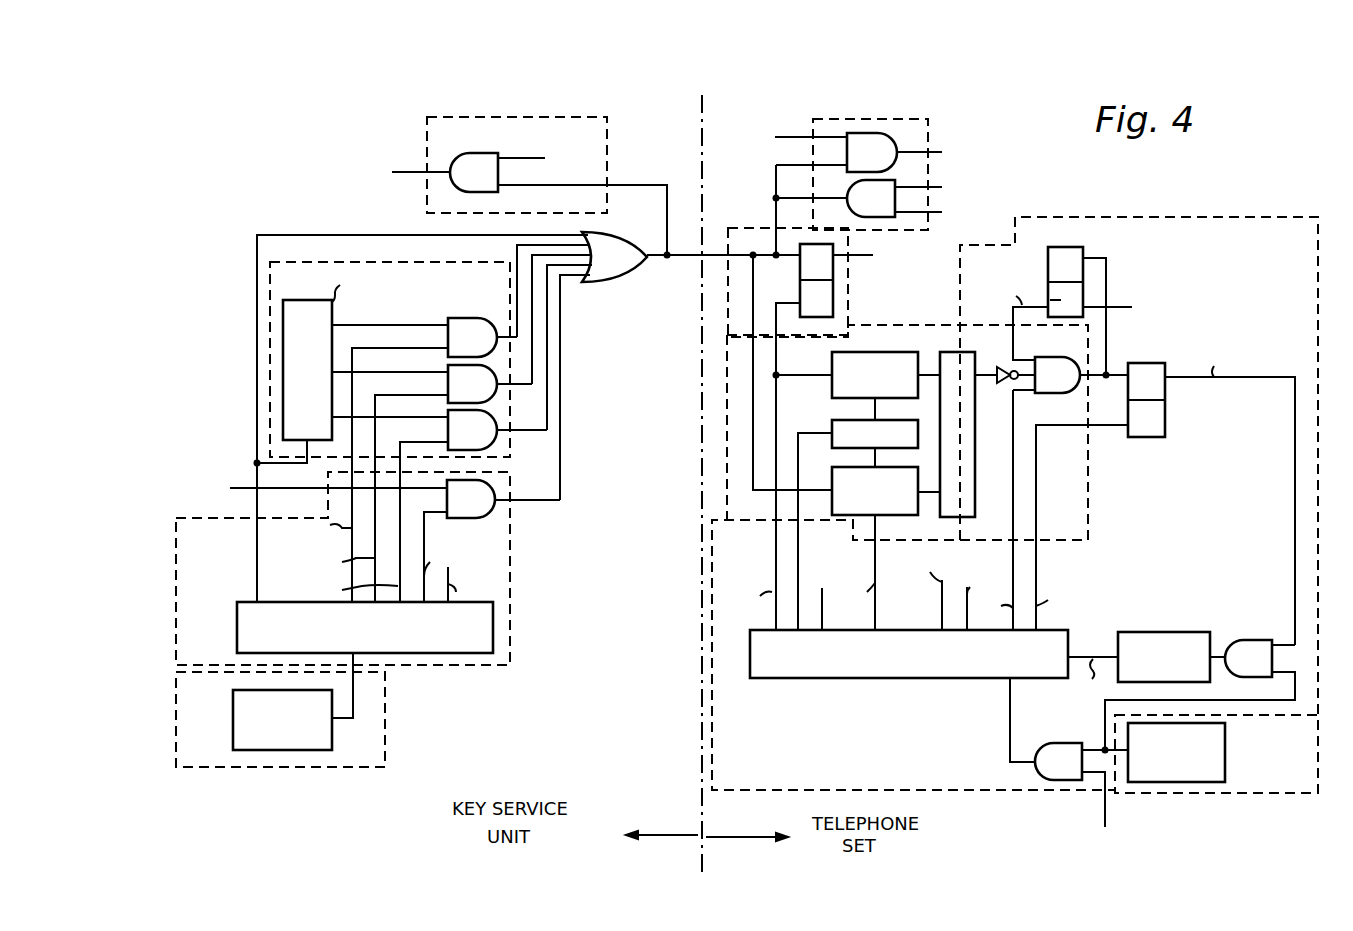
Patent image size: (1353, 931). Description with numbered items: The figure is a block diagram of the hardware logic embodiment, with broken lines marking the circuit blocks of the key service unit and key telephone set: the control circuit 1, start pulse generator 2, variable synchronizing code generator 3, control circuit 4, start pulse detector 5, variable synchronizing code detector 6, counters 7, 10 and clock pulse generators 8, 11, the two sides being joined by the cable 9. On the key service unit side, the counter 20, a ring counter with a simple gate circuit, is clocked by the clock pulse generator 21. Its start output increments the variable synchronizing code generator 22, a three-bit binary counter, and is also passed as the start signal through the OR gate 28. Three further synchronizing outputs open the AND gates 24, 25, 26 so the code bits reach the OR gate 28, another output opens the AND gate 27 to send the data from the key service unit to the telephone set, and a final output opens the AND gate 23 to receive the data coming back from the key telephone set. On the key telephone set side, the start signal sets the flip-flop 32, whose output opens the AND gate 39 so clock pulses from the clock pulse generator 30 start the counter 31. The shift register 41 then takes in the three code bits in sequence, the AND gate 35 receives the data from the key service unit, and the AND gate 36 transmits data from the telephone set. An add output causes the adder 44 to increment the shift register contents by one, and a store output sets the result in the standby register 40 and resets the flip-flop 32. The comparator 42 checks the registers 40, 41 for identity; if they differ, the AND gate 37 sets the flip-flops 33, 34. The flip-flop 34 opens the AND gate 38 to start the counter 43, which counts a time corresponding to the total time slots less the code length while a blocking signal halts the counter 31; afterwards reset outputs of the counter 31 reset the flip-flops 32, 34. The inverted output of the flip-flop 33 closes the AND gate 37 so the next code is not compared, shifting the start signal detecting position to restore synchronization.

The control circuit 1 is at (520, 117).
The start pulse generator 2 is at (305, 235).
The variable synchronizing code generator 3 is at (270, 271).
The control circuit 4 is at (878, 119).
The start pulse detector 5 is at (741, 228).
The variable synchronizing code detector 6 is at (727, 416).
The counter 7 is at (179, 567).
The clock pulse generator 8 is at (176, 702).
The cable 9 is at (686, 255).
The counter 10 is at (1218, 217).
The clock pulse generator 11 is at (1230, 793).
The counter 20 is at (237, 630).
The clock pulse generator 21 is at (233, 722).
The variable synchronizing code generator 22 is at (302, 300).
The AND gate 23 is at (493, 202).
The AND gate 24 is at (424, 460).
The AND gate 25 is at (432, 483).
The AND gate 26 is at (439, 506).
The AND gate 27 is at (356, 539).
The OR gate 28 is at (582, 366).
The clock pulse generator 30 is at (1225, 751).
The counter 31 is at (798, 678).
The flip-flop 32 is at (800, 291).
The flip-flop 33 is at (1067, 247).
The flip-flop 34 is at (1148, 363).
The AND gate 35 is at (869, 191).
The AND gate 36 is at (892, 201).
The AND gate 37 is at (1051, 493).
The AND gate 38 is at (1200, 695).
The AND gate 39 is at (1081, 799).
The standby register 40 is at (832, 363).
The shift register 41 is at (823, 483).
The comparator 42 is at (975, 440).
The counter 43 is at (1158, 632).
The adder 44 is at (832, 428).